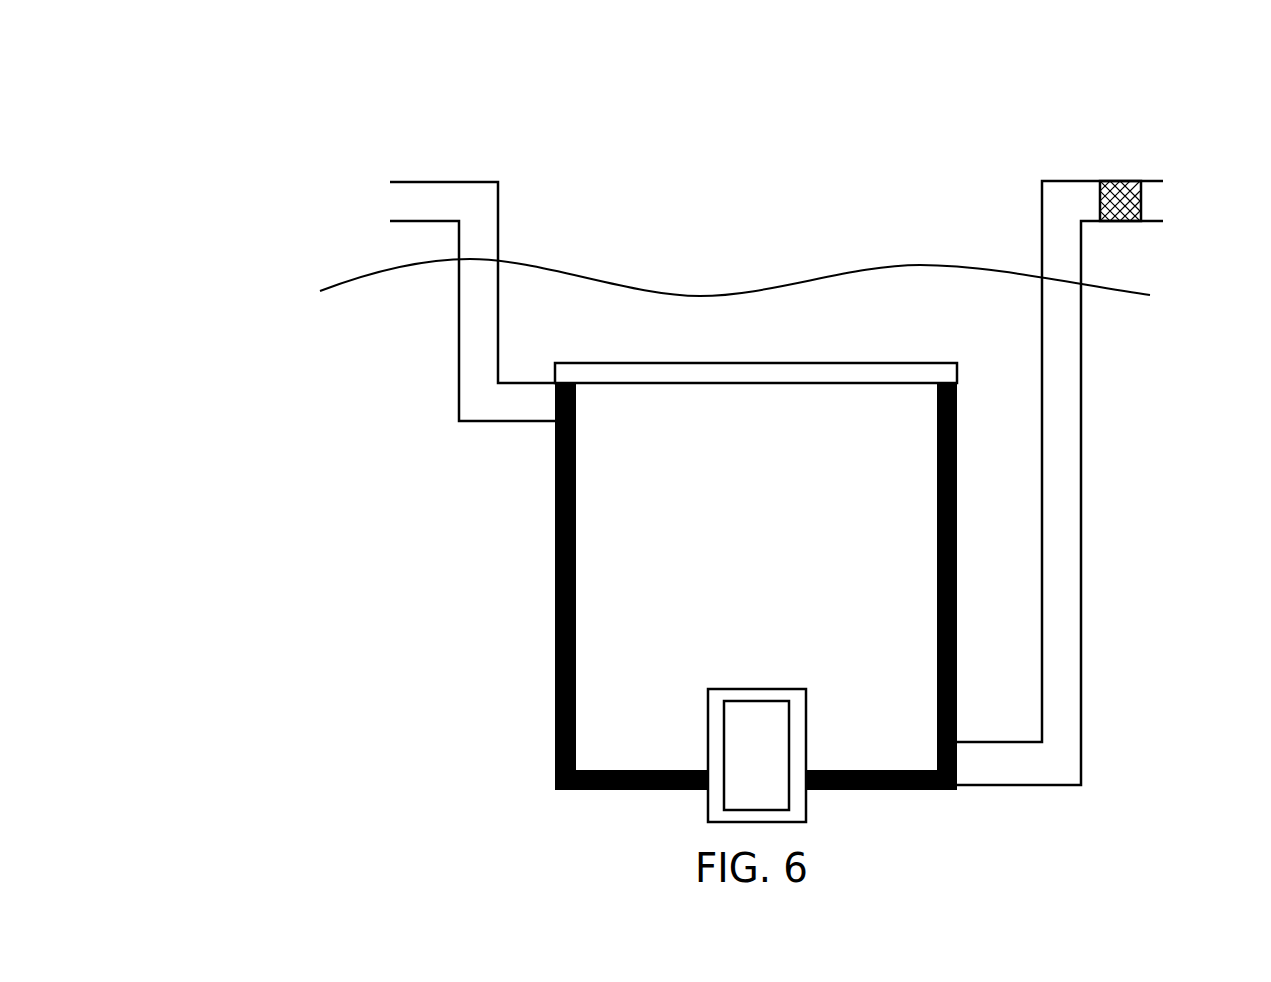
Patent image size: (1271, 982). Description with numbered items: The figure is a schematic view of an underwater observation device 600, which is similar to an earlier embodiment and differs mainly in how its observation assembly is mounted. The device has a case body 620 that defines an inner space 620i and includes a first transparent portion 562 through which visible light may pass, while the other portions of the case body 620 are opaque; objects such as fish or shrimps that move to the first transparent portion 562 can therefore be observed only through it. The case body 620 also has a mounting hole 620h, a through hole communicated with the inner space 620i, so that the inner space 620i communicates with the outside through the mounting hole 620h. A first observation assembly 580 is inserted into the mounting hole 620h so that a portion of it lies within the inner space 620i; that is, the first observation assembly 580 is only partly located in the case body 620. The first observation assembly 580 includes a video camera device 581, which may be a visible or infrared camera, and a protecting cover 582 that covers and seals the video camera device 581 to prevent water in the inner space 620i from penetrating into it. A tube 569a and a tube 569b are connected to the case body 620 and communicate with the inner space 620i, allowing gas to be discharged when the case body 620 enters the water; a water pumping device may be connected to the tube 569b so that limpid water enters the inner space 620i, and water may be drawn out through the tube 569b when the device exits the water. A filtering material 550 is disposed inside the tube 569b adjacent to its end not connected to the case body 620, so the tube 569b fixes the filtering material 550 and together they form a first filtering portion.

The underwater observation device 600 is at (148, 67).
The case body 620 is at (555, 578).
The inner space 620i is at (611, 423).
The mounting hole 620h is at (680, 750).
The first transparent portion 562 is at (871, 370).
The tube 569a is at (468, 345).
The tube 569b is at (1068, 397).
The filtering material 550 is at (1142, 200).
The first observation assembly 580 is at (758, 697).
The video camera device 581 is at (769, 716).
The protecting cover 582 is at (722, 688).